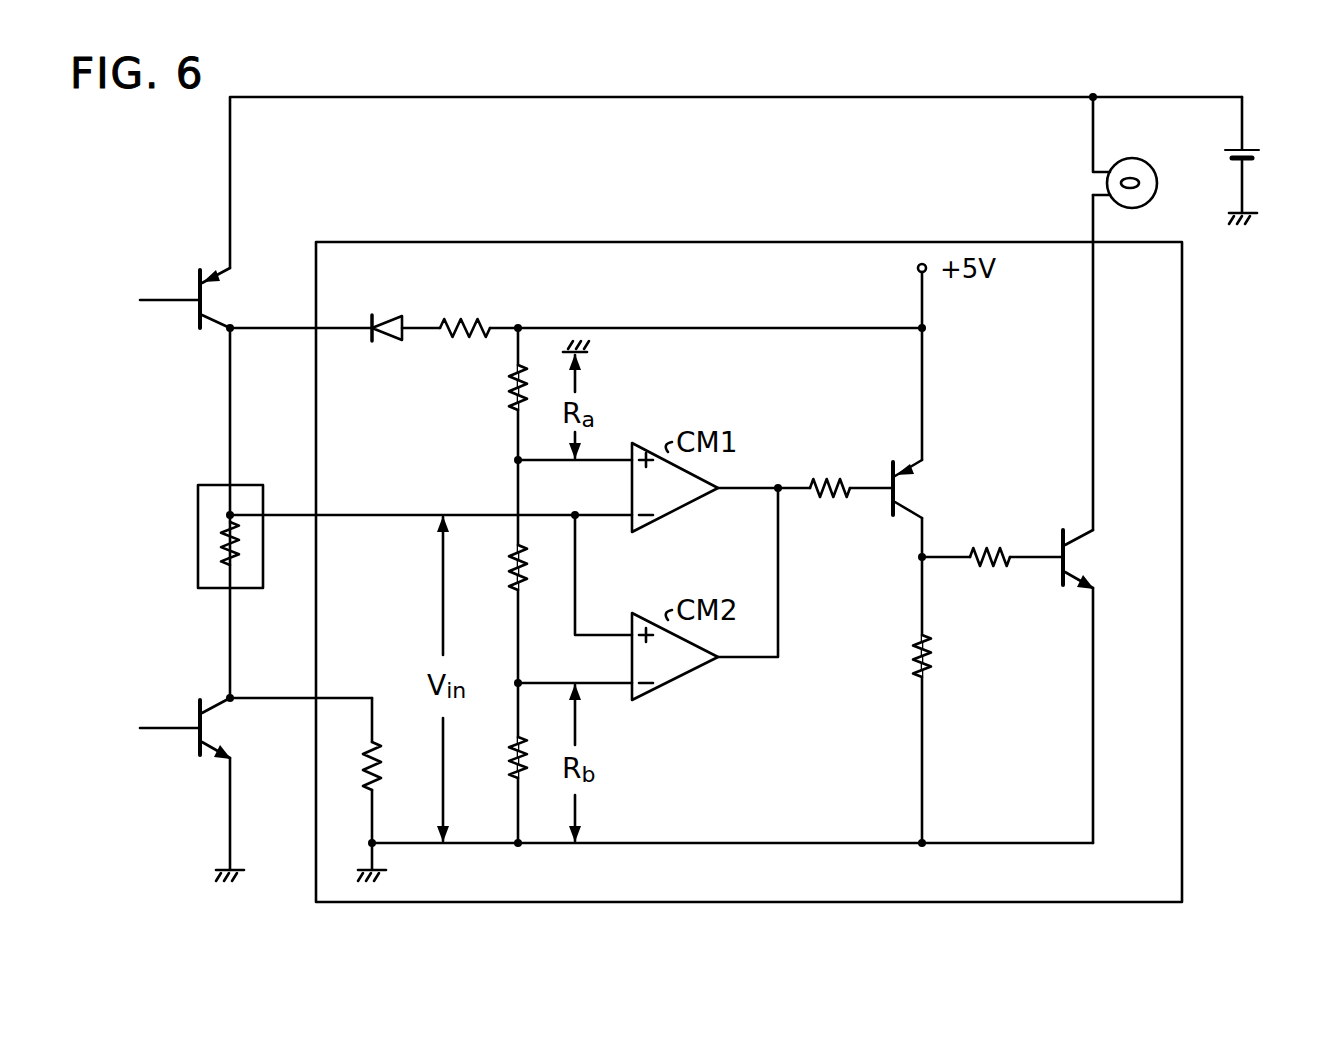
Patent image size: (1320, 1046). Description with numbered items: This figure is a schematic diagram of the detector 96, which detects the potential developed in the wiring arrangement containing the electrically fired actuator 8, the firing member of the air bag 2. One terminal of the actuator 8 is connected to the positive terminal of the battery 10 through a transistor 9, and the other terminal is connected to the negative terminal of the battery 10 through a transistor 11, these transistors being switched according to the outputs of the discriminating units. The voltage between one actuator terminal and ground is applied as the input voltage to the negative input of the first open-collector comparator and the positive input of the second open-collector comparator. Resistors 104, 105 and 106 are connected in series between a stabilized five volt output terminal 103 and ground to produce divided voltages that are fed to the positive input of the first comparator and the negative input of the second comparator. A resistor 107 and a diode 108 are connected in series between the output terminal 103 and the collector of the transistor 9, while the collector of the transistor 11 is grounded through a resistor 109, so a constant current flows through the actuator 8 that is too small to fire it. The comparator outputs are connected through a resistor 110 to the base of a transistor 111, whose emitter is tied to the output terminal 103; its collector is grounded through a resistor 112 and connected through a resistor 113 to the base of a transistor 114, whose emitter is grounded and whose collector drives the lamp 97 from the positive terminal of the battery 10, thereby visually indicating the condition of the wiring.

The air bag 2 is at (212, 485).
The electrically fired actuator 8 is at (222, 540).
The transistor 9 is at (212, 300).
The battery 10 is at (1258, 160).
The transistor 11 is at (212, 728).
The detector 96 is at (740, 242).
The lamp 97 is at (1150, 165).
The output terminal 103 is at (918, 268).
The resistor 104 is at (510, 386).
The resistor 105 is at (510, 568).
The resistor 106 is at (508, 758).
The resistor 107 is at (460, 318).
The diode 108 is at (396, 316).
The resistor 109 is at (383, 758).
The resistor 110 is at (828, 479).
The transistor 111 is at (905, 488).
The resistor 112 is at (932, 655).
The resistor 113 is at (986, 566).
The transistor 114 is at (1075, 560).